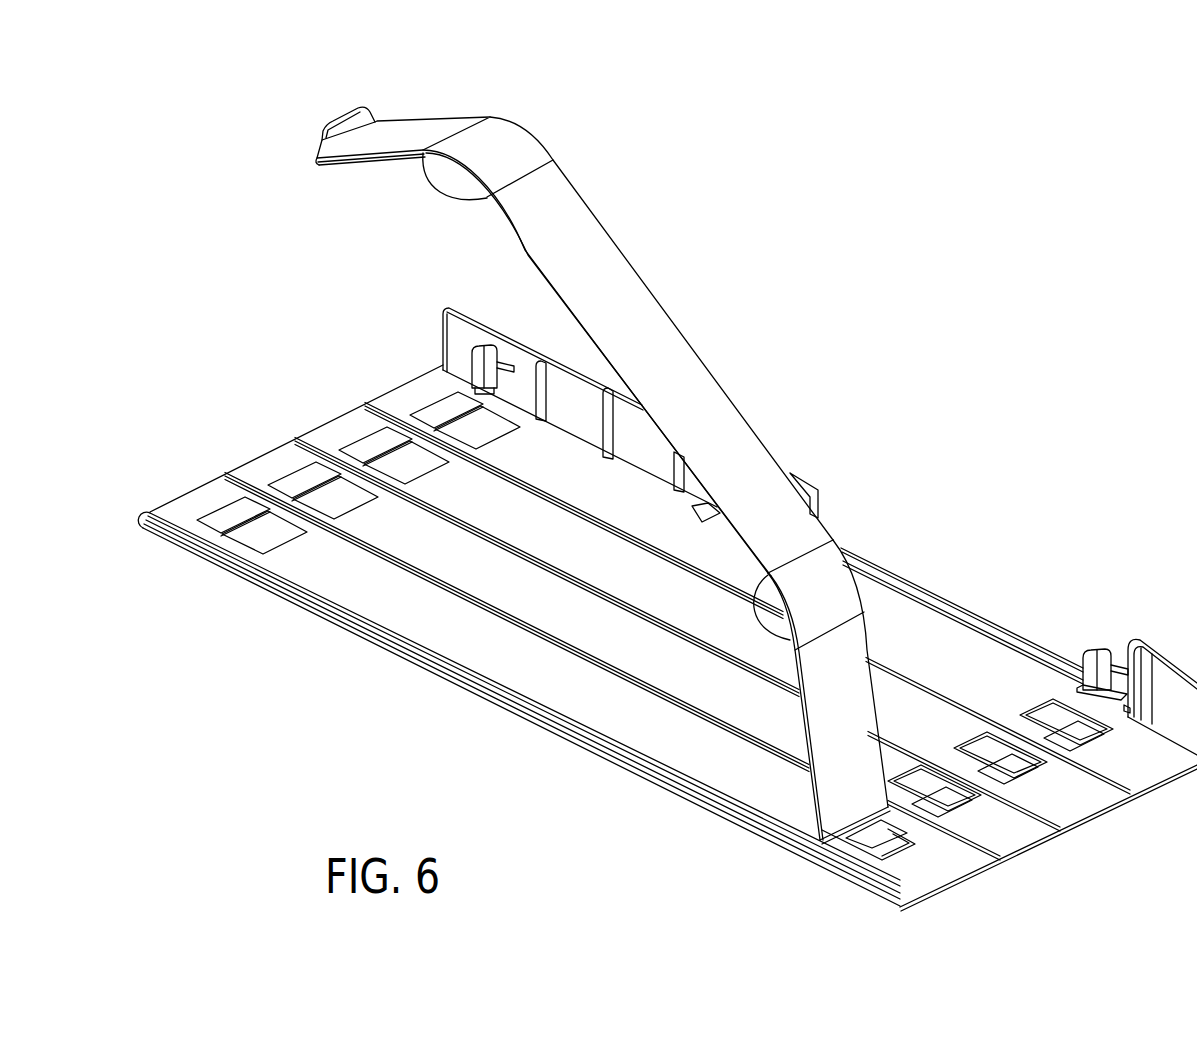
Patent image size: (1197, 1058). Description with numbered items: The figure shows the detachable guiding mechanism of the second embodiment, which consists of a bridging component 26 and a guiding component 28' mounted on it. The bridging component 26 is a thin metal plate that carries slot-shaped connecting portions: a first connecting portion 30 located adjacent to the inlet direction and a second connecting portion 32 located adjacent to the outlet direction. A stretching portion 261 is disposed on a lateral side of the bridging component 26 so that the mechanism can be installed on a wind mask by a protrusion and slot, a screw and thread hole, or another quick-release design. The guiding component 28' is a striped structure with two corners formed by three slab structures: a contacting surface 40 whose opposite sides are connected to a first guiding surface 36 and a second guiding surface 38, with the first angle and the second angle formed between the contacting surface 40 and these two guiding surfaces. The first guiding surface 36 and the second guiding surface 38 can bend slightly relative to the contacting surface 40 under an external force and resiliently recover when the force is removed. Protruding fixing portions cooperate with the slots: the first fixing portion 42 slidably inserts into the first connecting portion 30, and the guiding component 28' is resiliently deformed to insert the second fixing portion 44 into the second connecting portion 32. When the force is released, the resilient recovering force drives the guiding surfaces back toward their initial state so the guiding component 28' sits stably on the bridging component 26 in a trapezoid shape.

The bridging component 26 is at (360, 605).
The stretching portion 261 is at (568, 390).
The second connecting portion 32 is at (227, 503).
The first connecting portion 30 is at (901, 841).
The guiding component 28' is at (595, 499).
The second guiding surface 38 is at (532, 124).
The contacting surface 40 is at (612, 247).
The first guiding surface 36 is at (826, 566).
The second fixing portion 44 is at (342, 130).
The first fixing portion 42 is at (857, 847).